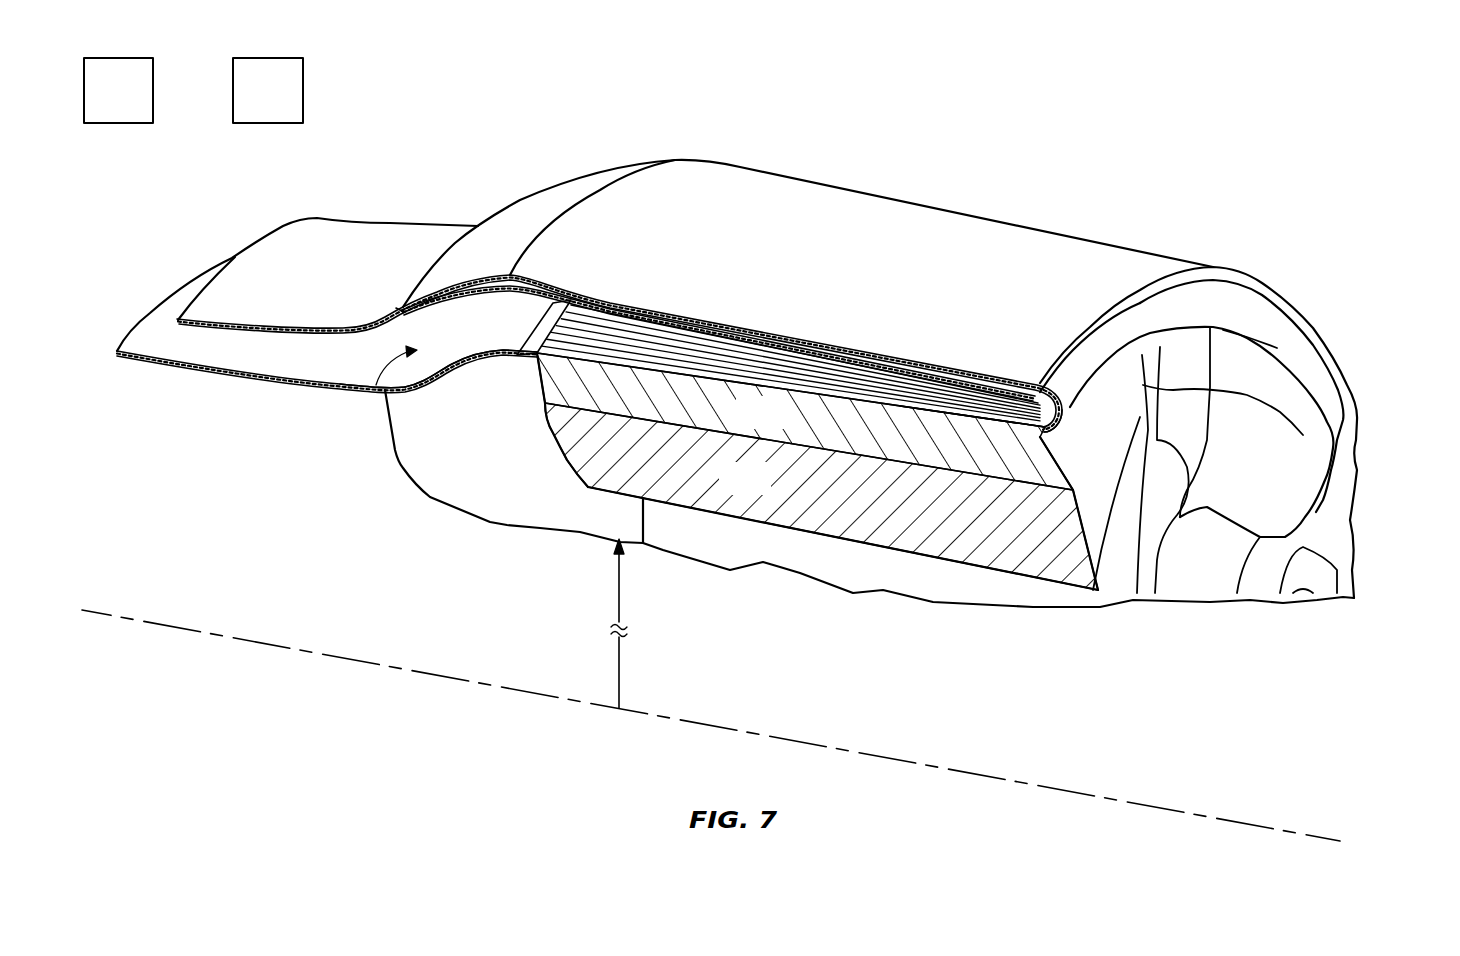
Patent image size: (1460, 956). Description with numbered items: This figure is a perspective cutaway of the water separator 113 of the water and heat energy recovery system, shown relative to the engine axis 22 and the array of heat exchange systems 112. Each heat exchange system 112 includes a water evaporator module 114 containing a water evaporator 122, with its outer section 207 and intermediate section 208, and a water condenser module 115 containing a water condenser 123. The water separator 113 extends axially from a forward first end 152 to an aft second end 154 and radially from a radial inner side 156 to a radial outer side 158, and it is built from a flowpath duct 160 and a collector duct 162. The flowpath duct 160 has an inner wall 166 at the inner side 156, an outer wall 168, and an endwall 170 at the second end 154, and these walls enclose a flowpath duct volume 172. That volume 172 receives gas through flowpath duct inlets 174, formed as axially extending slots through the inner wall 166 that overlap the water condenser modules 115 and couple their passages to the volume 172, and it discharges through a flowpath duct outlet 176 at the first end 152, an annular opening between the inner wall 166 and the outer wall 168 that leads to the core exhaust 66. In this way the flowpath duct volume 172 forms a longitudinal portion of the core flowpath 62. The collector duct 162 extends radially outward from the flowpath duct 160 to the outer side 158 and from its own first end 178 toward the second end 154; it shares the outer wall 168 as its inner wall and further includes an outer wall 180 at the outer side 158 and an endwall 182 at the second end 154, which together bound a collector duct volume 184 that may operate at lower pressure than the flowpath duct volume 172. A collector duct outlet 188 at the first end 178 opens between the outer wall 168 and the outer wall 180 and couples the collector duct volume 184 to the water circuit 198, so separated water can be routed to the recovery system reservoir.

The axis 22 is at (103, 613).
The core flowpath 62 is at (385, 390).
The core exhaust 66 is at (163, 333).
The heat exchange system 112 is at (570, 503).
The water separator 113 is at (1263, 267).
The water evaporator module 114 is at (1042, 595).
The water condenser module 115 is at (530, 402).
The water evaporator 122 is at (726, 492).
The water condenser 123 is at (743, 426).
The first end 152 is at (106, 358).
The second end 154 is at (1172, 310).
The radial inner side 156 is at (987, 430).
The radial outer side 158 is at (948, 362).
The flowpath duct 160 is at (375, 205).
The collector duct 162 is at (558, 170).
The inner wall 166 is at (530, 357).
The outer wall 168 is at (562, 287).
The endwall 170 is at (1060, 403).
The flowpath duct volume 172 is at (385, 390).
The flowpath duct inlets 174 is at (672, 360).
The flowpath duct outlet 176 is at (180, 340).
The first end 178 is at (450, 247).
The outer wall 180 is at (860, 343).
The endwall 182 is at (1063, 375).
The collector duct volume 184 is at (747, 328).
The collector duct outlet 188 is at (396, 308).
The water circuit 198 is at (400, 309).
The outer section 207 is at (1098, 545).
The intermediate section 208 is at (1157, 572).